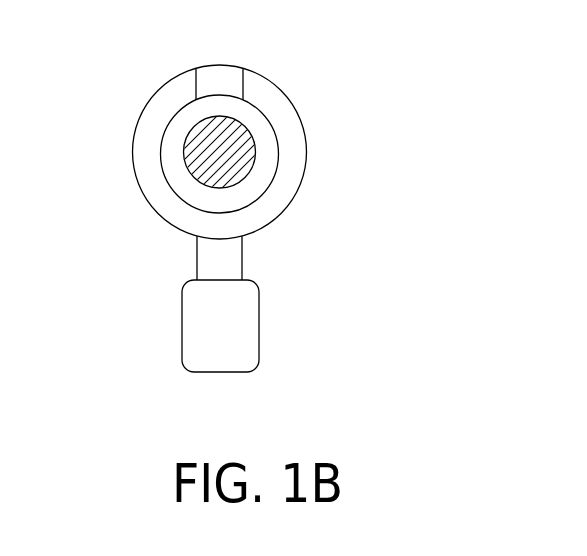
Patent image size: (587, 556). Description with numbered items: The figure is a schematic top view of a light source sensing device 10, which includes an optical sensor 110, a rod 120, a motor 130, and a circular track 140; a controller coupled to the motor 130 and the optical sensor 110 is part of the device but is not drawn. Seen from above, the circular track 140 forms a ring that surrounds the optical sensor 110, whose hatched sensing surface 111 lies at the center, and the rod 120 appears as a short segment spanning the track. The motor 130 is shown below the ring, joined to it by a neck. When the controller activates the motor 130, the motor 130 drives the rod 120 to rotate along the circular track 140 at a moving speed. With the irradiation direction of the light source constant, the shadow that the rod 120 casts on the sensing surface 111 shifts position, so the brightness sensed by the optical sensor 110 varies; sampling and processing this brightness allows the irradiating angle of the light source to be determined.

The light source sensing device 10 is at (264, 216).
The optical sensor 110 is at (253, 172).
The sensing surface 111 is at (250, 139).
The rod 120 is at (215, 72).
The motor 130 is at (253, 322).
The circular track 140 is at (148, 137).